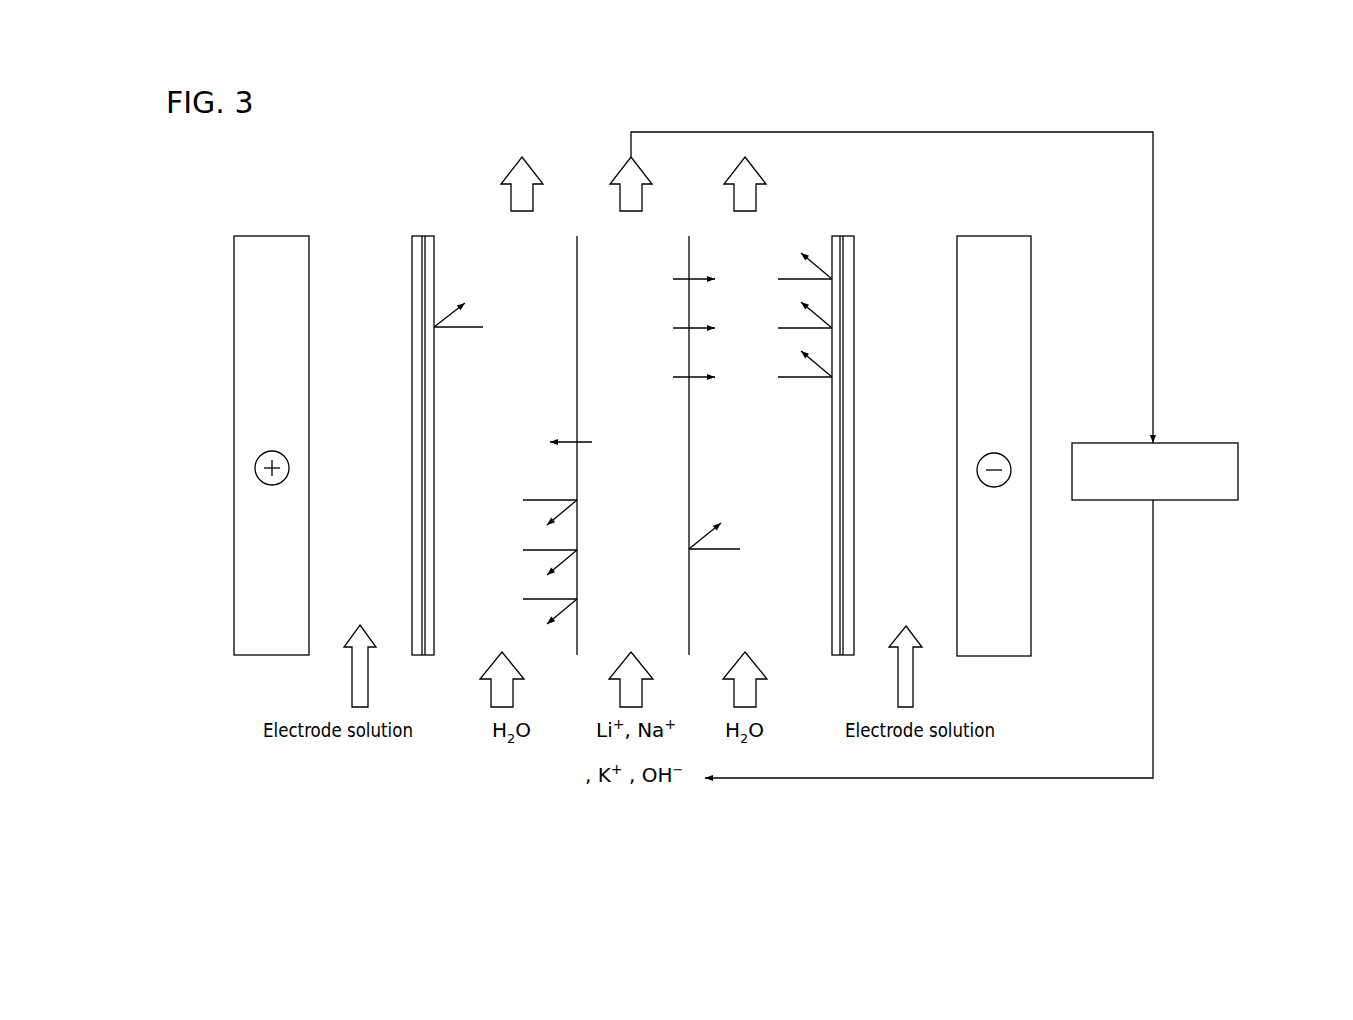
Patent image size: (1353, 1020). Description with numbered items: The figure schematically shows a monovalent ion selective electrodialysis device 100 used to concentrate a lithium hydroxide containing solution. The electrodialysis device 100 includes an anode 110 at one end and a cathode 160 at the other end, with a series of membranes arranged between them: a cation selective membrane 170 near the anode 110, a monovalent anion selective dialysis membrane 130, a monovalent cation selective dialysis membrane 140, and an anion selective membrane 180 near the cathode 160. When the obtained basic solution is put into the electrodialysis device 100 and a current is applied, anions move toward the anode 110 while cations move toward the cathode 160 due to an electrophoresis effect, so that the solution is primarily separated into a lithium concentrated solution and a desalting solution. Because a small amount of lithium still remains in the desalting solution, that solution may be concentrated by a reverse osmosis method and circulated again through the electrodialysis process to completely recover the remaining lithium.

The electrodialysis device 100 is at (708, 117).
The anode 110 is at (271, 429).
The monovalent anion selective dialysis membrane 130 is at (563, 429).
The monovalent cation selective dialysis membrane 140 is at (713, 429).
The cathode 160 is at (994, 430).
The cation selective membrane 170 is at (470, 429).
The anion selective membrane 180 is at (798, 429).